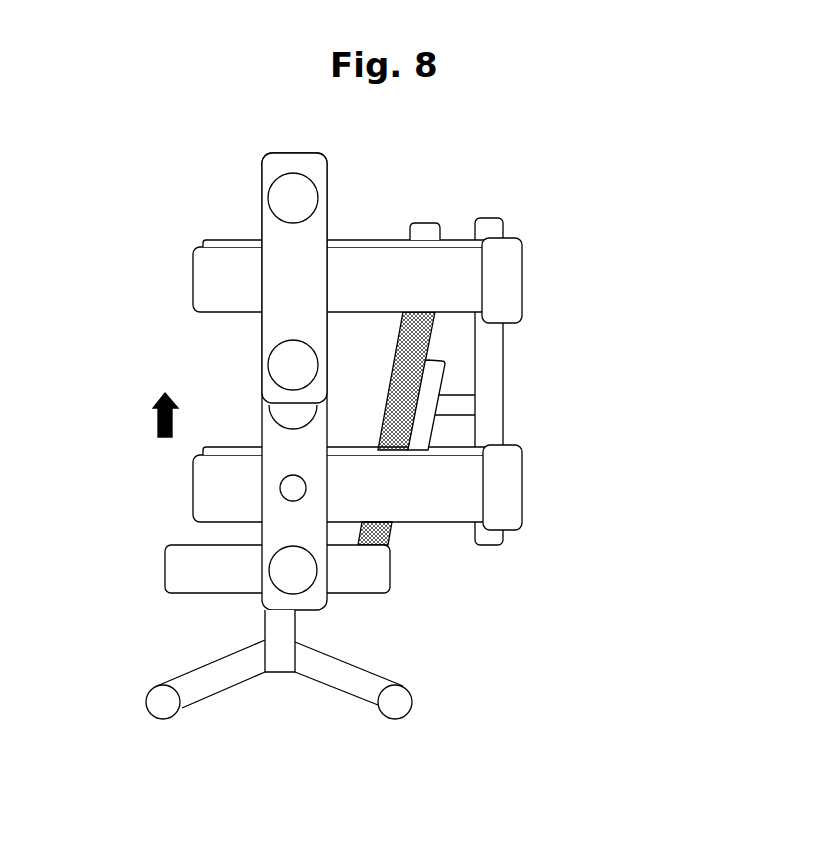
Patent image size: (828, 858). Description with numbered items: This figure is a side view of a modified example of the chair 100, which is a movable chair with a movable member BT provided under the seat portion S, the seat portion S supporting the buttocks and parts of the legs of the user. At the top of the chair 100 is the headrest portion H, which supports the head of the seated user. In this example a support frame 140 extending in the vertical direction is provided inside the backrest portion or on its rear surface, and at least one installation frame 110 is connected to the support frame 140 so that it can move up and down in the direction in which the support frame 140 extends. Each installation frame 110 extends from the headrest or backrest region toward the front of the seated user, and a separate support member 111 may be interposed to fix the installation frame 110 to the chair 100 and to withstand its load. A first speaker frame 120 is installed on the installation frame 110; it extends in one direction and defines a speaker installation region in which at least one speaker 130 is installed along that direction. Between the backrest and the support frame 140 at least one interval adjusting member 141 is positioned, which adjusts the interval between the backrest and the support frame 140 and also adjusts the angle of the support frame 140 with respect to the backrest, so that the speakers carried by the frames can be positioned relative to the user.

The chair 100 is at (667, 185).
The installation frame 110 is at (208, 258).
The support member 111 is at (515, 293).
The first speaker frame 120 is at (272, 166).
The speaker 130 is at (284, 358).
The support frame 140 is at (497, 437).
The interval adjusting member 141 is at (467, 407).
The headrest portion H is at (423, 233).
The seat portion S is at (180, 572).
The movable member BT is at (287, 624).